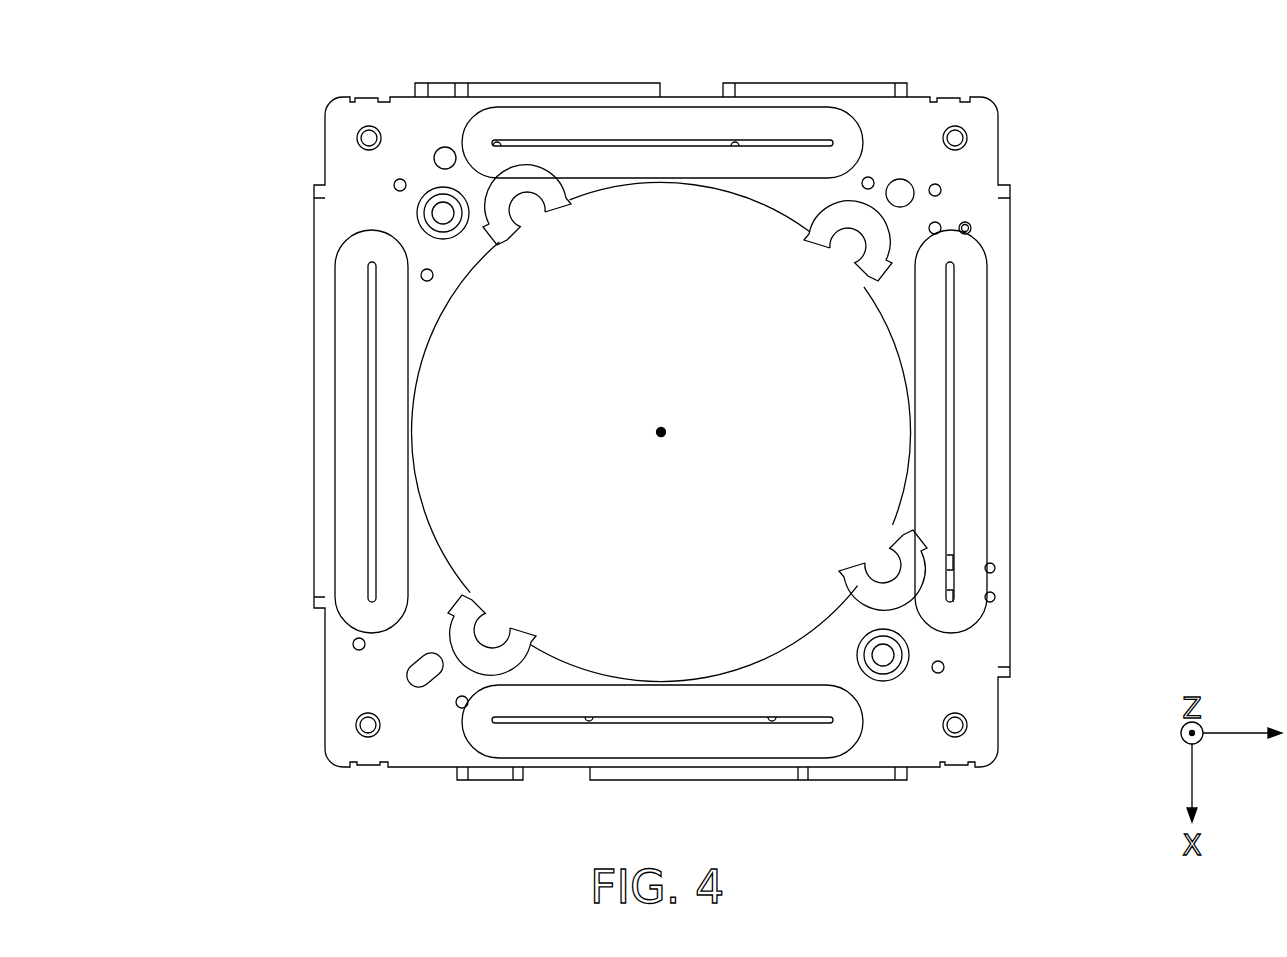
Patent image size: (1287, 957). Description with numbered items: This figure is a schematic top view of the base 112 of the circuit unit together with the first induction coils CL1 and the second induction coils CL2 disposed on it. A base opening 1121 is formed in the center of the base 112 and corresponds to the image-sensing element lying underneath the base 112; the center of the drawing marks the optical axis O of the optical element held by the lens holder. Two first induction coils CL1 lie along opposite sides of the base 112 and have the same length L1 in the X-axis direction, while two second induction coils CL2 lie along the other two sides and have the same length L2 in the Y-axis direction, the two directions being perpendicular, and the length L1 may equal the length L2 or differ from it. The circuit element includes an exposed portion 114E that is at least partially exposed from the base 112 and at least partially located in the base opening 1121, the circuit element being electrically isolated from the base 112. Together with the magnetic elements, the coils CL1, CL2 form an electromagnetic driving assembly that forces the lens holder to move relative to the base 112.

The base 112 is at (433, 565).
The base opening 1121 is at (780, 327).
The exposed portion 114E is at (505, 227).
The first induction coils CL1 is at (350, 432).
The second induction coils CL2 is at (850, 150).
The length L1 is at (1195, 633).
The length L2 is at (862, 838).
The optical axis O is at (661, 414).